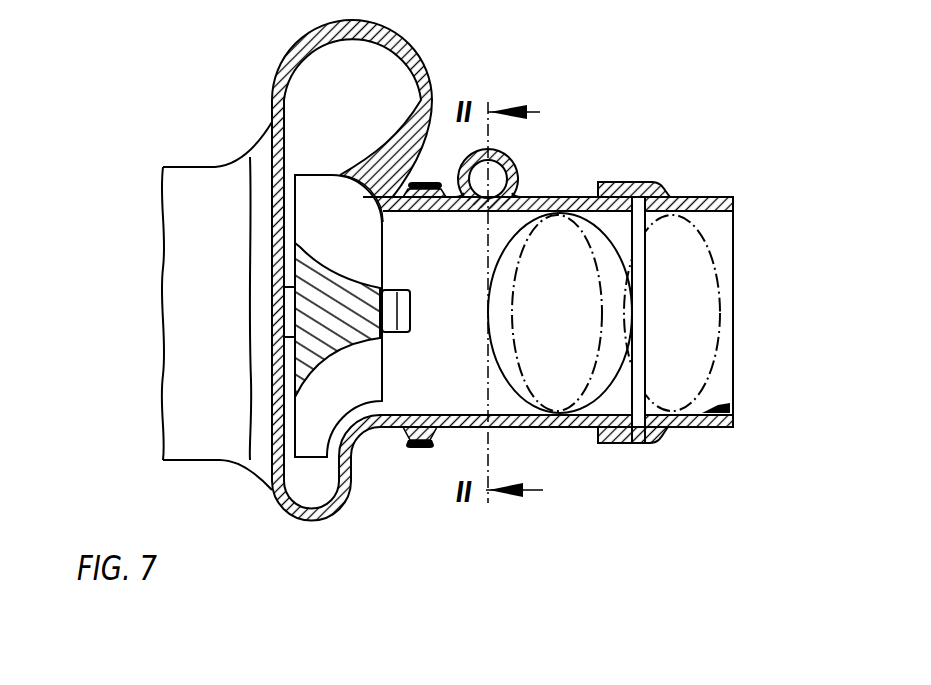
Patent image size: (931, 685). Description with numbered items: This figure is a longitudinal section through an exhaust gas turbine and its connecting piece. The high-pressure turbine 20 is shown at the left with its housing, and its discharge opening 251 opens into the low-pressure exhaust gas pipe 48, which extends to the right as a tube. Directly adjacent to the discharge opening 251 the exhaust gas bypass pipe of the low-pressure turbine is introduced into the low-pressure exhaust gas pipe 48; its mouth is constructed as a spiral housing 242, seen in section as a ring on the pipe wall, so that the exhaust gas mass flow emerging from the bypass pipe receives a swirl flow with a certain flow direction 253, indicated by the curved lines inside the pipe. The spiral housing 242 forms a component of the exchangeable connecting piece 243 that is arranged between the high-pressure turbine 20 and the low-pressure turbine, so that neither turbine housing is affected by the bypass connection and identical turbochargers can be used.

The high-pressure turbine 20 is at (408, 43).
The discharge opening 251 is at (385, 212).
The spiral housing 242 is at (514, 160).
The flow direction 253 is at (728, 268).
The exchangeable connecting piece 243 is at (597, 428).
The low-pressure exhaust gas pipe 48 is at (688, 197).